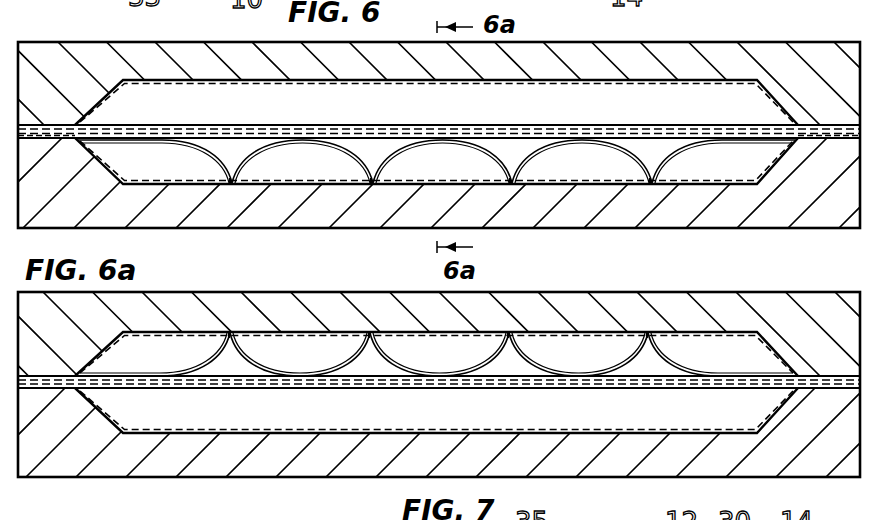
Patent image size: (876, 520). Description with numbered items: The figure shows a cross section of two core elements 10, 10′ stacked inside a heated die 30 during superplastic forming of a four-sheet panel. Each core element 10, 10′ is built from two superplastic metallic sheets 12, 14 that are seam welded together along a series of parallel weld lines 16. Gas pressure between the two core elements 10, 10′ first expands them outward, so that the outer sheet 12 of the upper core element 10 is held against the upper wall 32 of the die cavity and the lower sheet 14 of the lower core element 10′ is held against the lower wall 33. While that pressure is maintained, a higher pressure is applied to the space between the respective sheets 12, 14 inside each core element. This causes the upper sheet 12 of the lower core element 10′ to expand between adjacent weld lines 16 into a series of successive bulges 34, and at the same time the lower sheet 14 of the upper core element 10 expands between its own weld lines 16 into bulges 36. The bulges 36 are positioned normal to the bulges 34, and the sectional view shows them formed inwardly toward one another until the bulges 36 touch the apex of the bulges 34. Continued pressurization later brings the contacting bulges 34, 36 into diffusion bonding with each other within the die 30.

In FIG. 6A, the core element 10 is at (247, 339).
In FIG. 6, the core element 10′ is at (543, 186).
In FIG. 6A, the core element 10′ is at (212, 437).
In FIG. 6, the superplastic metallic sheet 12 is at (677, 80).
In FIG. 6A, the superplastic metallic sheet 12 is at (687, 332).
In FIG. 6, the superplastic metallic sheet 14 is at (573, 127).
In FIG. 6A, the superplastic metallic sheet 14 is at (195, 368).
In FIG. 6, the weld lines 16 is at (230, 185).
In FIG. 6A, the weld lines 16 is at (371, 338).
In FIG. 6, the heated die 30 is at (812, 48).
In FIG. 6A, the heated die 30 is at (836, 300).
In FIG. 6, the upper wall 32 is at (712, 85).
In FIG. 6A, the upper wall 32 is at (308, 342).
In FIG. 6A, the lower wall 33 is at (278, 433).
In FIG. 6, the bulges 34 is at (266, 152).
In FIG. 6A, the bulges 34 is at (619, 405).
In FIG. 6, the bulges 36 is at (209, 108).
In FIG. 6A, the bulges 36 is at (407, 360).